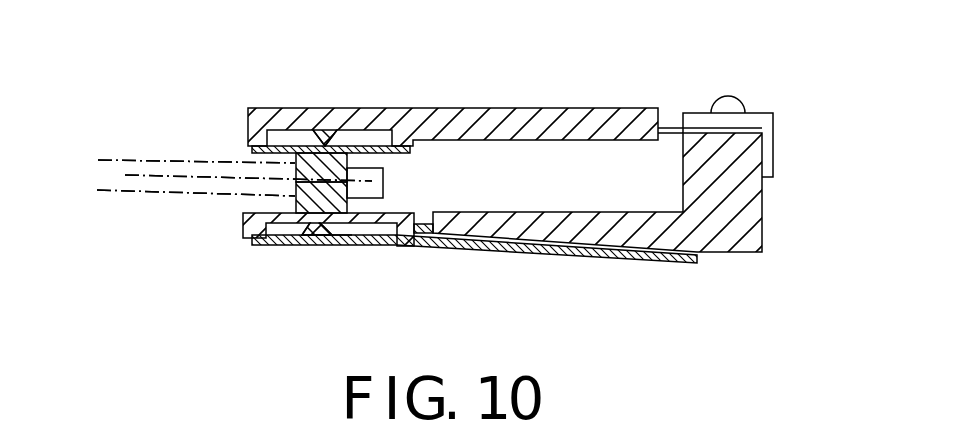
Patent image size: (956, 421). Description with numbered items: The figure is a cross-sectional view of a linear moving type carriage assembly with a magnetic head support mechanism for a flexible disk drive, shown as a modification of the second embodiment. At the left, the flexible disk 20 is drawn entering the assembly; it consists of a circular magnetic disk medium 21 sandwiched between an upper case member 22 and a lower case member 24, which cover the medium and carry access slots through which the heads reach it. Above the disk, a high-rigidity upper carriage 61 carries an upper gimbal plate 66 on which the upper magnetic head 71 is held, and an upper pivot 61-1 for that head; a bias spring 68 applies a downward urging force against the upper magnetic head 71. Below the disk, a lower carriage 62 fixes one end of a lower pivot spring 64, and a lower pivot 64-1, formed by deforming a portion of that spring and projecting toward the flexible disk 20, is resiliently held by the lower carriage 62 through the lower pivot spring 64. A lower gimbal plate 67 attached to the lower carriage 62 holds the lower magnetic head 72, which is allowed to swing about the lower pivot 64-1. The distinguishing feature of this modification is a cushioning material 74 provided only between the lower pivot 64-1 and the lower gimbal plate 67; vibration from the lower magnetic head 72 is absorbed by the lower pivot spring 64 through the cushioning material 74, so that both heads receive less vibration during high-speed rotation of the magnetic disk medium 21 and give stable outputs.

The flexible disk 20 is at (105, 150).
The magnetic disk medium 21 is at (125, 175).
The upper case member 22 is at (151, 159).
The lower case member 24 is at (137, 193).
The upper carriage 61 is at (626, 108).
The projection of upper holder 61-1 is at (325, 142).
The lower carriage 62 is at (734, 247).
The lower pivot spring 64 is at (372, 250).
The lower pivot 64-1 is at (305, 243).
The upper gimbal plate 66 is at (394, 155).
The lower gimbal plate 67 is at (396, 206).
The bias spring 68 is at (674, 128).
The upper magnetic head 71 is at (296, 166).
The lower magnetic head 72 is at (296, 204).
The cushioning material 74 is at (343, 238).